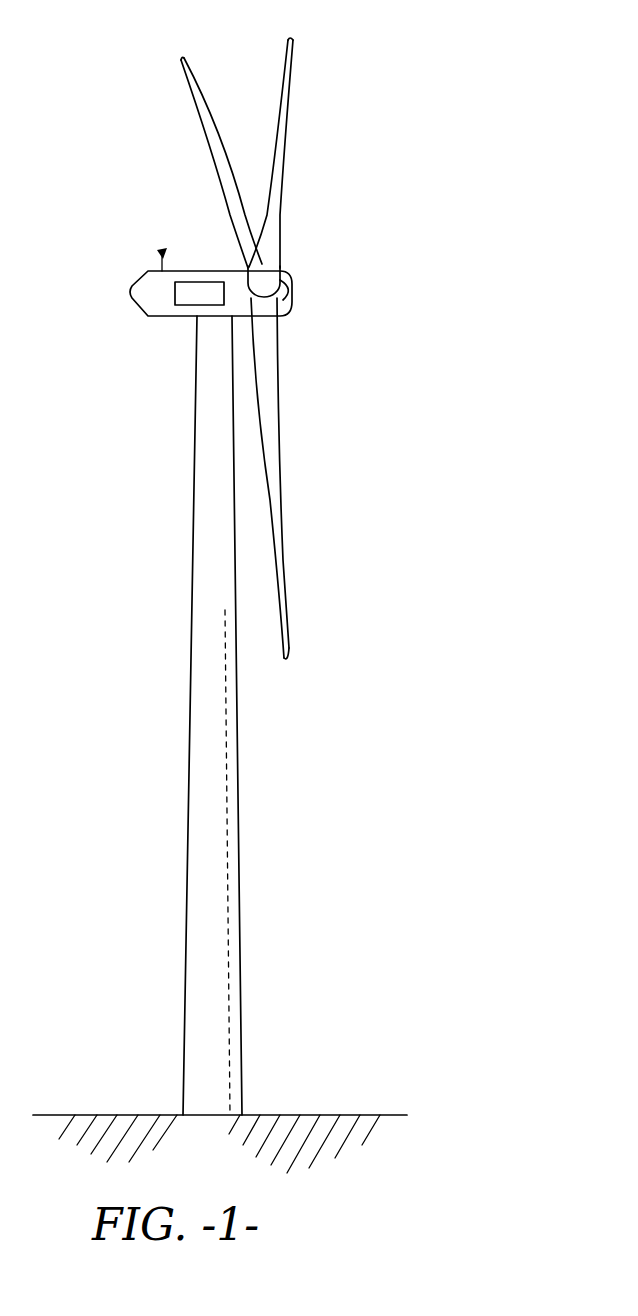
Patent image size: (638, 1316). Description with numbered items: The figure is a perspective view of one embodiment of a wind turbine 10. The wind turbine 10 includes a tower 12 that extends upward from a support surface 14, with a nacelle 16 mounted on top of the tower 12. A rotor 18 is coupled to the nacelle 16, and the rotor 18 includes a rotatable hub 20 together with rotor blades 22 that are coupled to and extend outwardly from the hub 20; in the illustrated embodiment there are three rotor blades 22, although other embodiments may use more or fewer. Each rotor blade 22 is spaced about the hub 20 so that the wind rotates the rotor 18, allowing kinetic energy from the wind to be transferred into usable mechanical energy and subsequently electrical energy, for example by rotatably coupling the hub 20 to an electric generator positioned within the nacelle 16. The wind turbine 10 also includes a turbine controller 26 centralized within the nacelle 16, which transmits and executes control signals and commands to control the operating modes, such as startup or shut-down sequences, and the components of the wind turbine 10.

The wind turbine 10 is at (405, 116).
The tower 12 is at (202, 827).
The support surface 14 is at (115, 1113).
The nacelle 16 is at (172, 317).
The rotor 18 is at (292, 270).
The rotatable hub 20 is at (289, 299).
The rotor blade 22 is at (282, 80).
The turbine controller 26 is at (190, 278).